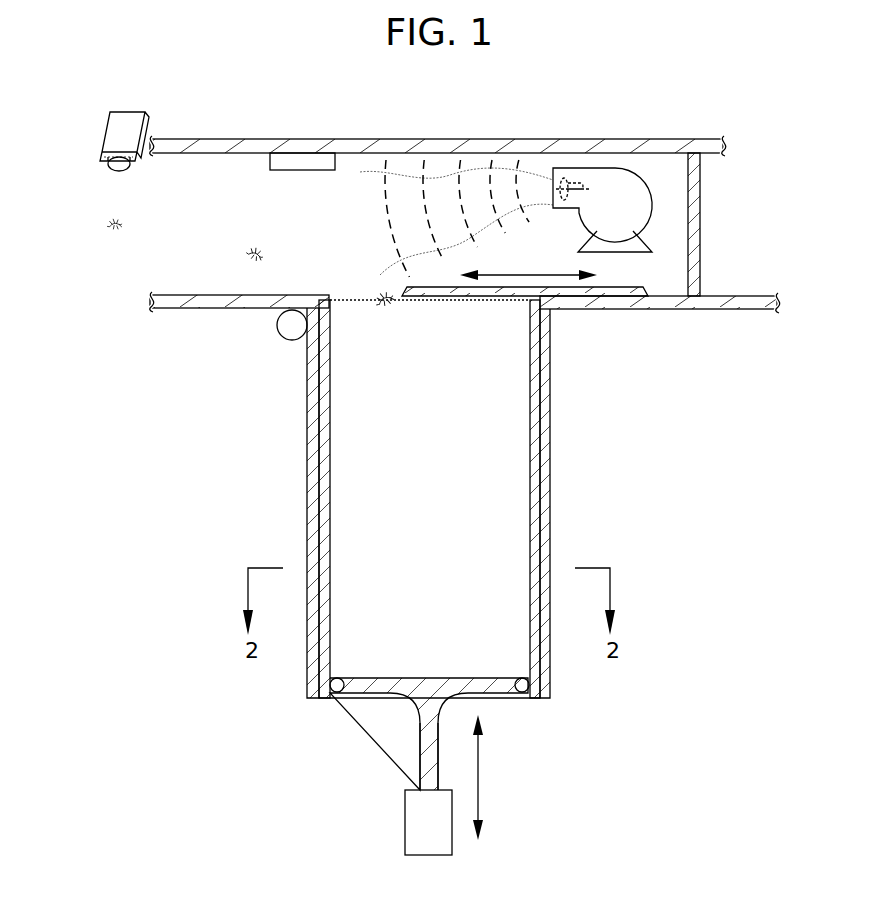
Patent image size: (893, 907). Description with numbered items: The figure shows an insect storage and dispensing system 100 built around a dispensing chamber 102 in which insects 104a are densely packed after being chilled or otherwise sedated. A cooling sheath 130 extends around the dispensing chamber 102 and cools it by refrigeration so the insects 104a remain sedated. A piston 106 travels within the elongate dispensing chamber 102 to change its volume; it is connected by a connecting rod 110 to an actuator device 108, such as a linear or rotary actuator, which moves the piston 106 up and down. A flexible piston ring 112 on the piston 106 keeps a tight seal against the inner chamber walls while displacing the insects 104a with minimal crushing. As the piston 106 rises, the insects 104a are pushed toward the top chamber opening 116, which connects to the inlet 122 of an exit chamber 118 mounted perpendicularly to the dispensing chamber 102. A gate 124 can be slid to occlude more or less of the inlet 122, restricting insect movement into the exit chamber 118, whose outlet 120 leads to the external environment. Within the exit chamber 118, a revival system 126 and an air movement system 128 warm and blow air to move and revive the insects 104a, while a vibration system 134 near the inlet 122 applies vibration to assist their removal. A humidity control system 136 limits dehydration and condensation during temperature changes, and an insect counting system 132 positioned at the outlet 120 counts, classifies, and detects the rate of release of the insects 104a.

The insect storage and dispensing system 100 is at (668, 106).
The dispensing chamber 102 is at (542, 413).
The insects 104a is at (360, 424).
The piston 106 is at (502, 686).
The actuator device 108 is at (415, 825).
The connecting rod 110 is at (422, 752).
The flexible piston ring 112 is at (328, 688).
The top chamber opening 116 is at (350, 320).
The exit chamber 118 is at (223, 140).
The outlet 120 is at (122, 268).
The inlet 122 is at (376, 280).
The gate 124 is at (608, 292).
The revival system 126 is at (637, 197).
The air movement system 128 is at (553, 187).
The cooling sheath 130 is at (307, 485).
The insect counting system 132 is at (120, 128).
The vibration system 134 is at (278, 320).
The humidity control system 136 is at (270, 165).